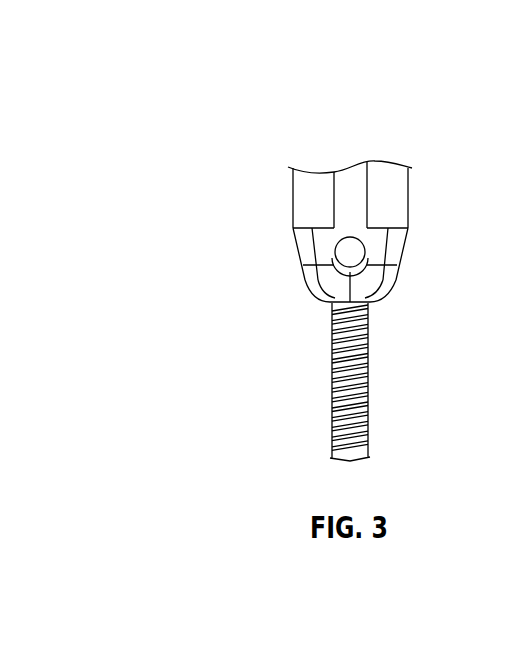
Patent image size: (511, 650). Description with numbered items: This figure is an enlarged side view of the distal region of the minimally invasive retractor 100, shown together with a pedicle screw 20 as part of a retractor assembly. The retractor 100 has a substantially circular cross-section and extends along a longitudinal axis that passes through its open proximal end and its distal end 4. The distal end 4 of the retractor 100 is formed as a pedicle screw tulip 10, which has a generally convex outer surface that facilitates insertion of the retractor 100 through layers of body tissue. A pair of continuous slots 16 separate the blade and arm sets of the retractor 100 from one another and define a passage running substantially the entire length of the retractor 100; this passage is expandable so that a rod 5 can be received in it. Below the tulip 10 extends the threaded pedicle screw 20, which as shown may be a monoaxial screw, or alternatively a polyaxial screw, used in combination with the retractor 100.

The retractor 100 is at (277, 93).
The continuous slots 16 is at (347, 185).
The rod 5 is at (350, 237).
The pedicle screw tulip 10 is at (385, 252).
The distal end 4 is at (323, 302).
The pedicle screw 20 is at (368, 372).